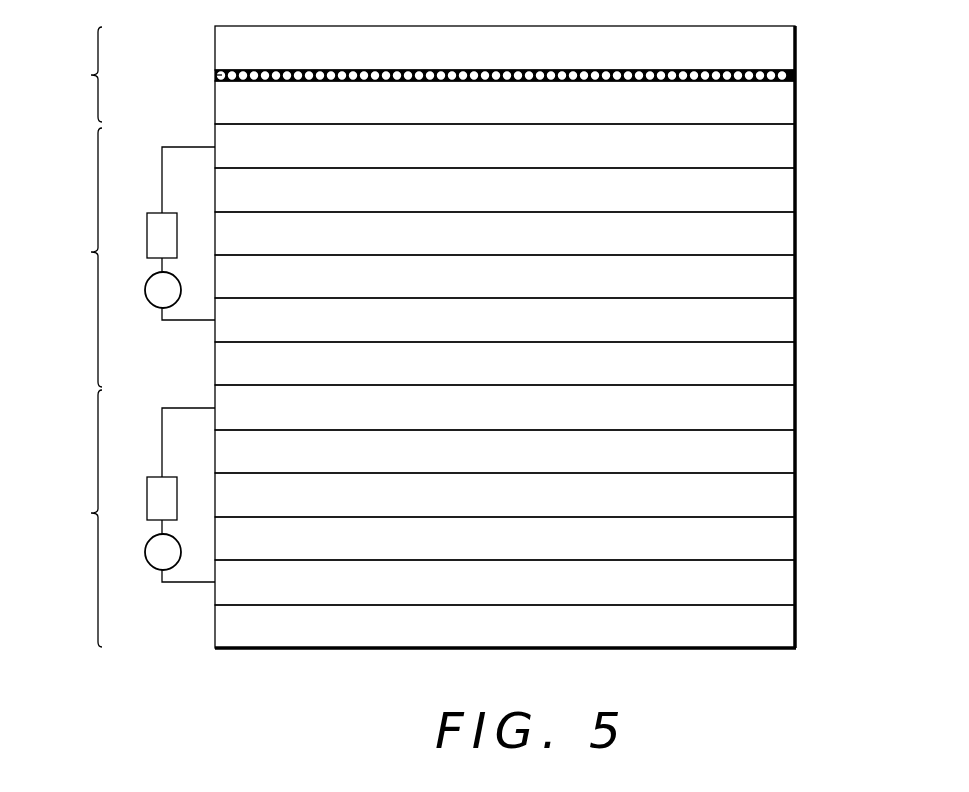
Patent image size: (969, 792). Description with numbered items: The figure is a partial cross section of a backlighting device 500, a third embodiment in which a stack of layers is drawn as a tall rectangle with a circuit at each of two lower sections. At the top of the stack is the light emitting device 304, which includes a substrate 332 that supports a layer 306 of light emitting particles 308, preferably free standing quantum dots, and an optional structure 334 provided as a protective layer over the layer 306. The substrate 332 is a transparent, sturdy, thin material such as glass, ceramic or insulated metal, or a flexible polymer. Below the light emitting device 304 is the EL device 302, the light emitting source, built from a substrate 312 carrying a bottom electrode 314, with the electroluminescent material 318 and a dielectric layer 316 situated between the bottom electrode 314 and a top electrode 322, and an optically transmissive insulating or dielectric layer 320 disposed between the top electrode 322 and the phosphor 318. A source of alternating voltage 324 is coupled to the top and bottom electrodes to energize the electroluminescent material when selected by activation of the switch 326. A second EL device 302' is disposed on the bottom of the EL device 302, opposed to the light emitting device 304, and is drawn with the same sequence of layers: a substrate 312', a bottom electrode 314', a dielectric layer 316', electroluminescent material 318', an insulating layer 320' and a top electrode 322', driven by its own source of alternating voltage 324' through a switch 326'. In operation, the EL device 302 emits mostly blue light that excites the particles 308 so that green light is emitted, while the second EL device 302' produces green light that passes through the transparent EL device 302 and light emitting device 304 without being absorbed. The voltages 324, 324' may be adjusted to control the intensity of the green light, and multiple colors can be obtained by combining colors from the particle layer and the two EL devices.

The protective structure 334 is at (782, 42).
The layer of light emitting particles 306 is at (770, 69).
The substrate 332 is at (785, 105).
The top electrode 322 is at (537, 146).
The insulating or dielectric layer 320 is at (537, 190).
The electroluminescent material 318 is at (537, 233).
The dielectric layer 316 is at (537, 276).
The bottom electrode 314 is at (537, 320).
The substrate 312 is at (537, 363).
The top electrode 322' is at (540, 407).
The insulating or dielectric layer 320' is at (540, 451).
The electroluminescent material 318' is at (540, 495).
The dielectric layer 316' is at (540, 538).
The bottom electrode 314' is at (540, 582).
The substrate 312' is at (540, 626).
The light emitting particles 308 is at (215, 76).
The light emitting device 304 is at (69, 74).
The EL device (light emitting source) 302 is at (72, 257).
The second EL device (light emitting source) 302' is at (66, 518).
The switch 326 is at (146, 215).
The source of alternating voltage 324 is at (149, 311).
The switch 326' is at (141, 476).
The source of alternating voltage 324' is at (148, 573).
The backlighting device 500 is at (734, 702).